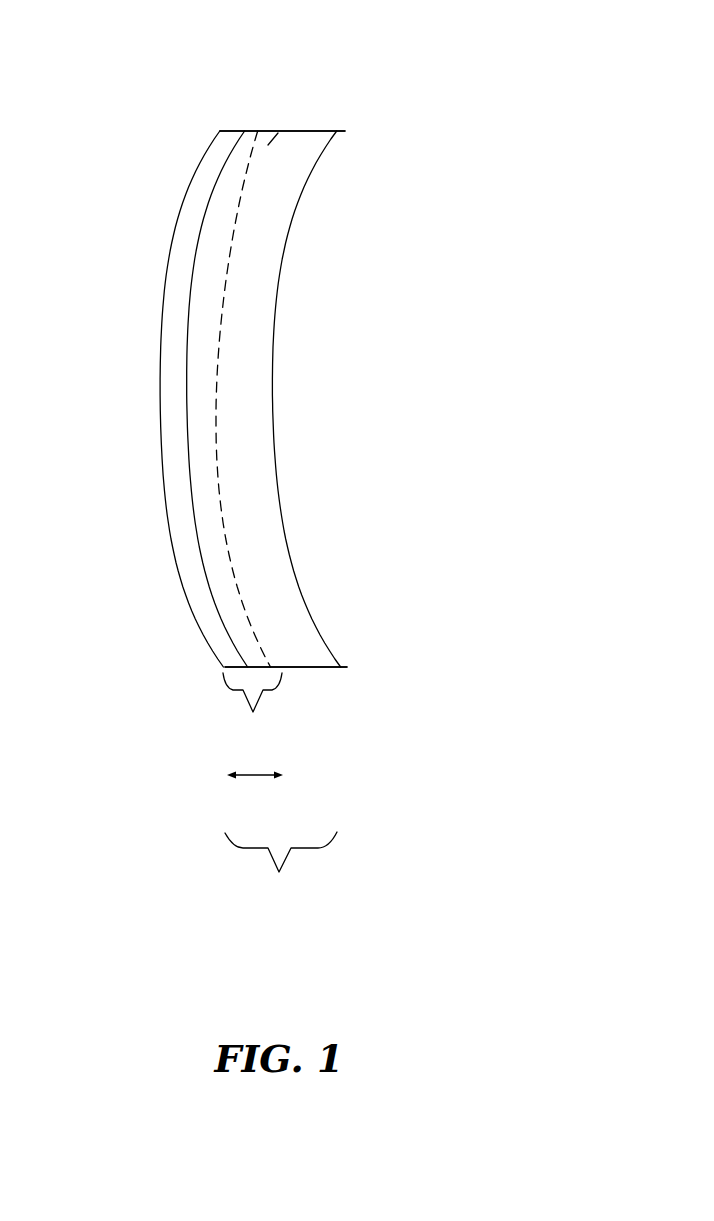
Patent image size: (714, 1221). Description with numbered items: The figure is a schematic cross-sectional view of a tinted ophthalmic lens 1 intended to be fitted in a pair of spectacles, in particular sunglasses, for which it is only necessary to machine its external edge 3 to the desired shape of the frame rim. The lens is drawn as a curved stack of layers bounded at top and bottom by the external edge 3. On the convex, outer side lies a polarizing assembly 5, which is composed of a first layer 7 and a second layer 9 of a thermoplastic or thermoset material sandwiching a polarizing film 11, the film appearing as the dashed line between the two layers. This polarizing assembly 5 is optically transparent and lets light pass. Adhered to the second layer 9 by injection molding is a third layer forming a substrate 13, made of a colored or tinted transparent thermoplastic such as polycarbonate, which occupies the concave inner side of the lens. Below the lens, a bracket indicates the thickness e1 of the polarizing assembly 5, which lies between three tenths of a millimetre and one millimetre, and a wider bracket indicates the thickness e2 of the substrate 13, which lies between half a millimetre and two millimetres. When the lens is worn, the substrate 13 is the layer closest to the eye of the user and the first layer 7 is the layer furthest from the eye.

The ophthalmic lens 1 is at (382, 255).
The external edge 3 is at (322, 128).
The polarizing assembly 5 is at (252, 715).
The first layer 7 is at (160, 286).
The second layer 9 is at (258, 130).
The polarizing film 11 is at (250, 130).
The substrate 13 is at (253, 442).
The thickness of the polarizing assembly e1 is at (255, 803).
The thickness of the substrate e2 is at (281, 876).